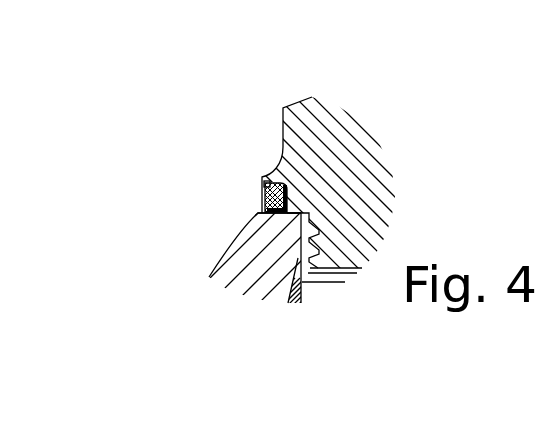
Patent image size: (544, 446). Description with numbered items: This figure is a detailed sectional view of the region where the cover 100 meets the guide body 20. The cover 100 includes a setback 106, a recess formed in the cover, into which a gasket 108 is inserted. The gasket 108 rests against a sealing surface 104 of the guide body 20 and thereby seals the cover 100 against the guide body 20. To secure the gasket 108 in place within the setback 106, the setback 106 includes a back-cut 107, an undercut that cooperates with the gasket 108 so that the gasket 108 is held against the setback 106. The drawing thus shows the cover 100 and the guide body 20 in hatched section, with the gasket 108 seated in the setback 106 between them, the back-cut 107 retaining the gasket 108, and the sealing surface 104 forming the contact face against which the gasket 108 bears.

The cover 100 is at (282, 107).
The threaded port body 20 is at (208, 277).
The sealing surface 104 is at (259, 211).
The setback 106 is at (265, 195).
The back-cut 107 is at (267, 185).
The gasket 108 is at (263, 205).